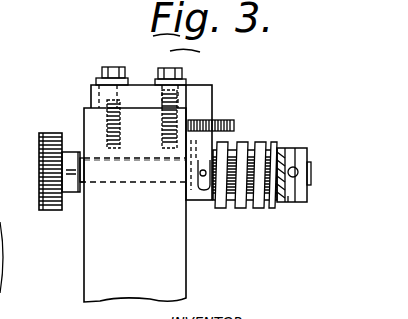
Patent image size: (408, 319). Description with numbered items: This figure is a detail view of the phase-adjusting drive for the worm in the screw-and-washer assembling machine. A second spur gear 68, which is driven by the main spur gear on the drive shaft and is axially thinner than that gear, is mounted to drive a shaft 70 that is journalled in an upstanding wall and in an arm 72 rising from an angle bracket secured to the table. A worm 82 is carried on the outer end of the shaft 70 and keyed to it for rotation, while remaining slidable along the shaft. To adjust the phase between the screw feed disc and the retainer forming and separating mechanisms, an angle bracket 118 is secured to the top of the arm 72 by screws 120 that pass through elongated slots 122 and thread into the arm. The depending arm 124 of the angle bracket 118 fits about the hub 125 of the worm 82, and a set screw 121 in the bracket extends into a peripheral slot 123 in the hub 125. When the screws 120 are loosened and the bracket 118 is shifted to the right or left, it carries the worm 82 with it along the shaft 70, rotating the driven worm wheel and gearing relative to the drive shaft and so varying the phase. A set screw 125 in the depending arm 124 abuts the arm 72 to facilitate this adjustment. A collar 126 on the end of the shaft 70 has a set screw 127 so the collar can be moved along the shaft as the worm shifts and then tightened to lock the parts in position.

The second spur gear 68 is at (50, 133).
The shaft 70 is at (98, 178).
The arm 72 is at (165, 274).
The worm 82 is at (254, 138).
The angle bracket 118 is at (90, 86).
The screws 120 is at (160, 68).
The set screw 121 is at (200, 207).
The elongated slots 122 is at (122, 110).
The peripheral slot 123 is at (177, 172).
The depending arm 124 is at (214, 117).
The hub 125 is at (232, 118).
The collar 126 is at (290, 203).
The set screw 127 is at (293, 148).